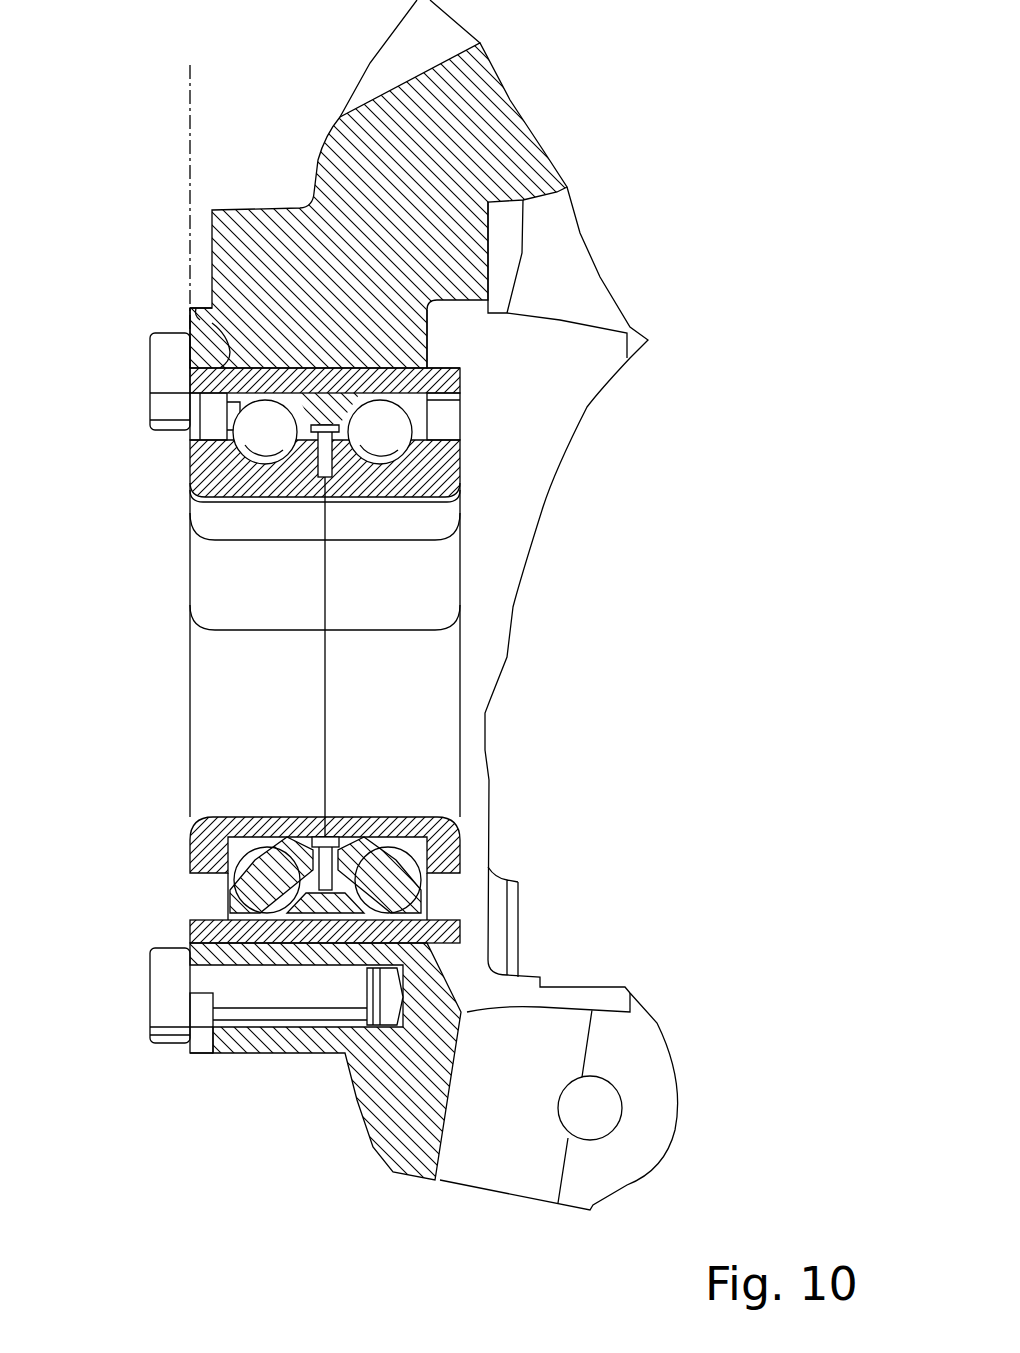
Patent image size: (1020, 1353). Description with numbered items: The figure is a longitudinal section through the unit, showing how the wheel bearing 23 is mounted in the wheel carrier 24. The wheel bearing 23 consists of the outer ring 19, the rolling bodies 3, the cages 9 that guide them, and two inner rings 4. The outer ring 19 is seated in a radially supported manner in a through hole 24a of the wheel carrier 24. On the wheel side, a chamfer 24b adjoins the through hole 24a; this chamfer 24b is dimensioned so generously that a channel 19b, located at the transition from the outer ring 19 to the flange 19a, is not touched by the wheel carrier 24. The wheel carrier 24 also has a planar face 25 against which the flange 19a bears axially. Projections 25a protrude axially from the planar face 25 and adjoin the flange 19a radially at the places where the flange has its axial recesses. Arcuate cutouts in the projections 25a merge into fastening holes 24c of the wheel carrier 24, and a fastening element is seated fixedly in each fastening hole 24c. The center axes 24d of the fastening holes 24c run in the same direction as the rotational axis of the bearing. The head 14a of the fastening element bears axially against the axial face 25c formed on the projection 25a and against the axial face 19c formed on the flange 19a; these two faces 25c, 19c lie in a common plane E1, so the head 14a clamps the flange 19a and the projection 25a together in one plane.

The rolling bodies 3 is at (272, 447).
The inner rings 4 is at (348, 480).
The cages 9 is at (358, 850).
The head 14a is at (167, 987).
The outer ring 19 is at (444, 378).
The flange 19a is at (190, 340).
The channel 19b is at (217, 373).
The axial face 19c is at (192, 932).
The wheel bearing 23 is at (423, 410).
The wheel carrier 24 is at (483, 125).
The through hole 24a is at (327, 373).
The chamfer 24b is at (195, 318).
The fastening holes 24c is at (313, 1053).
The center axes 24d is at (275, 997).
The planar face 25 is at (212, 268).
The projections 25a is at (197, 307).
The axial face 25c is at (190, 1027).
The common plane E1 is at (190, 130).